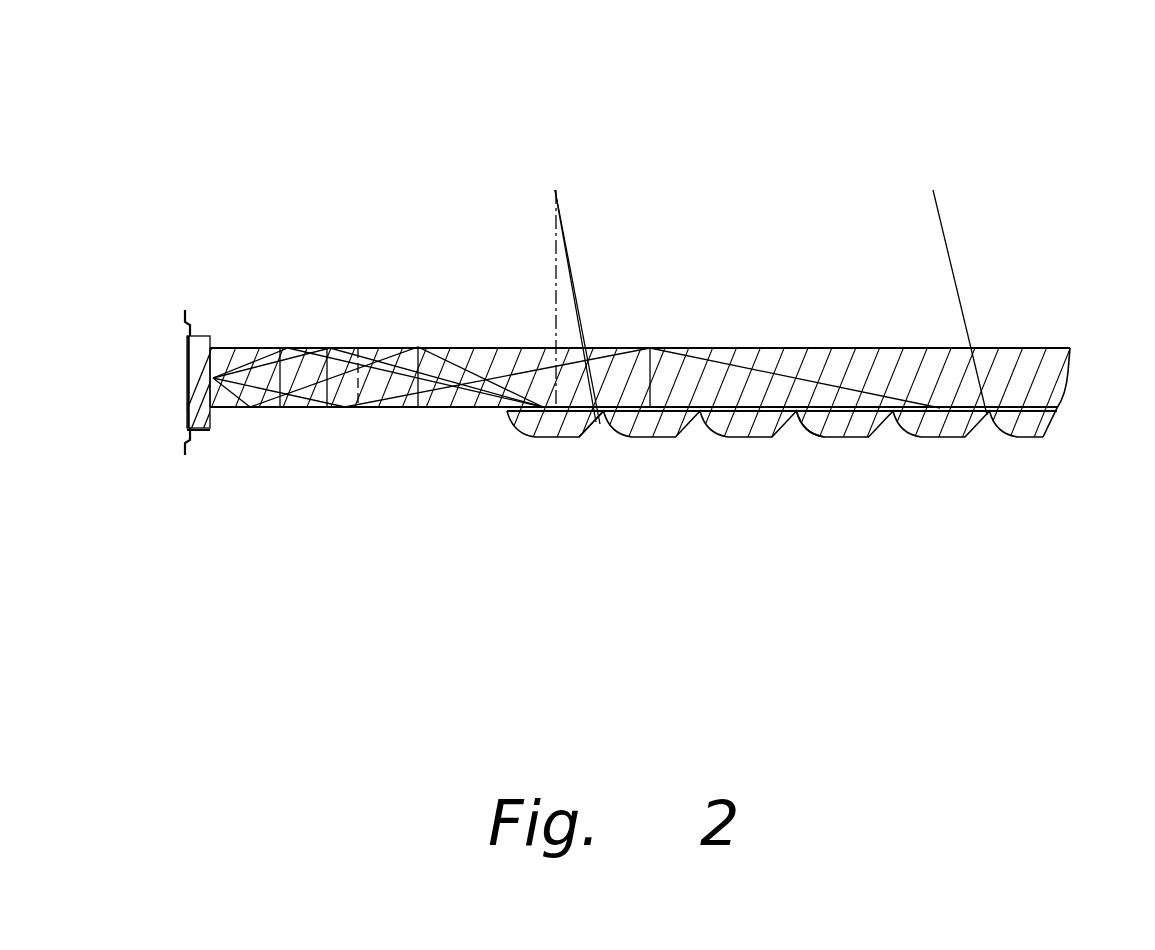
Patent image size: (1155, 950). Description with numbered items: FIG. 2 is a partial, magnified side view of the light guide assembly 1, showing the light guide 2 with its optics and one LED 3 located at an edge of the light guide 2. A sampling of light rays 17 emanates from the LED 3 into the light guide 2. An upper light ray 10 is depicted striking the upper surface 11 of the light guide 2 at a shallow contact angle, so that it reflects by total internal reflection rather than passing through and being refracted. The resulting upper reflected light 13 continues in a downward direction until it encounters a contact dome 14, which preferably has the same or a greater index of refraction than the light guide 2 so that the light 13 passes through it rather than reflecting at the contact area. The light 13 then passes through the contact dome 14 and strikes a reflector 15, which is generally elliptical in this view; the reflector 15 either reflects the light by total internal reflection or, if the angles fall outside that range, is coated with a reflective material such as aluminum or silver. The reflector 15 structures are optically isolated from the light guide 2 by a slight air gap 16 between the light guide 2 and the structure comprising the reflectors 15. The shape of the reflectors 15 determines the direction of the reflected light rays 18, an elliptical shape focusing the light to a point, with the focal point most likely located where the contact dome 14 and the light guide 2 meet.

The light guide assembly 1 is at (262, 267).
The light guide 2 is at (242, 360).
The LED 3 is at (195, 376).
The upper light ray 10 is at (292, 350).
The upper surface of the light guide 11 is at (326, 350).
The upper reflected light 13 is at (440, 377).
The contact dome 14 is at (557, 407).
The reflector 15 is at (588, 435).
The air gap 16 is at (792, 414).
The light rays 17 is at (268, 378).
The reflected light rays 18 is at (582, 325).